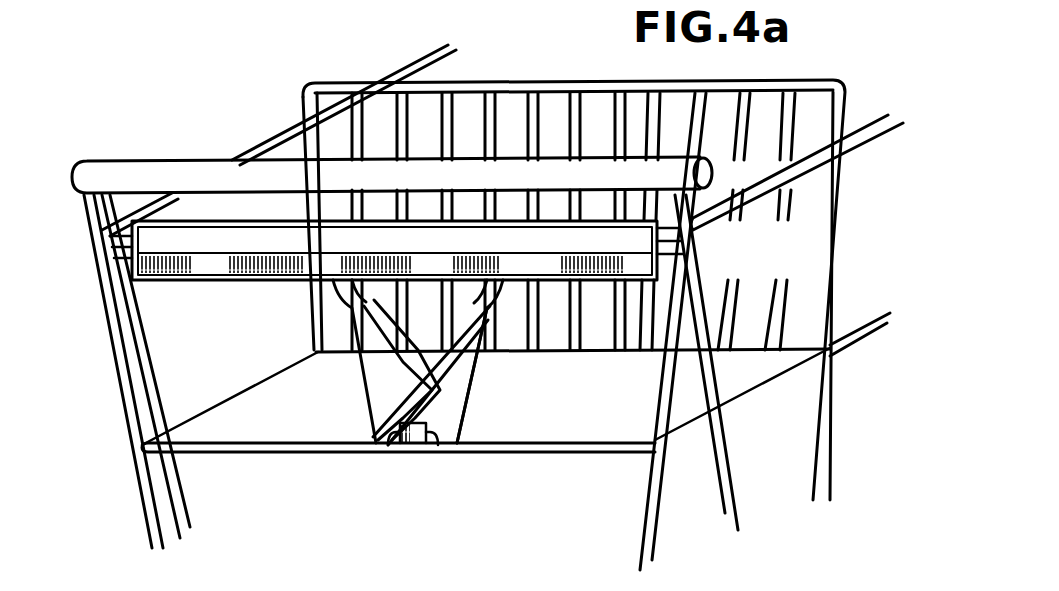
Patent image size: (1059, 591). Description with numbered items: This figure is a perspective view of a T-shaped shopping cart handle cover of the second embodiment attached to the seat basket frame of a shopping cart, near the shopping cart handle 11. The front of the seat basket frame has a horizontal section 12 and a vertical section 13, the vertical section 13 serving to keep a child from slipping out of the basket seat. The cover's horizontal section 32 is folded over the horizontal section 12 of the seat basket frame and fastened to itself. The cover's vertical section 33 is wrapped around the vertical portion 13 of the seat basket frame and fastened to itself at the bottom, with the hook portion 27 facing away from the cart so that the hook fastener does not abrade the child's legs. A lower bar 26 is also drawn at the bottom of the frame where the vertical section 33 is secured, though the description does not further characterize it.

The shopping cart handle 11 is at (150, 170).
The horizontal section of the seat basket frame 12 is at (107, 259).
The vertical section of the seat basket frame 13 is at (442, 330).
The lower bar 26 is at (368, 409).
The hook portion 27 is at (209, 267).
The horizontal section 32 is at (205, 233).
The vertical section 33 is at (455, 395).